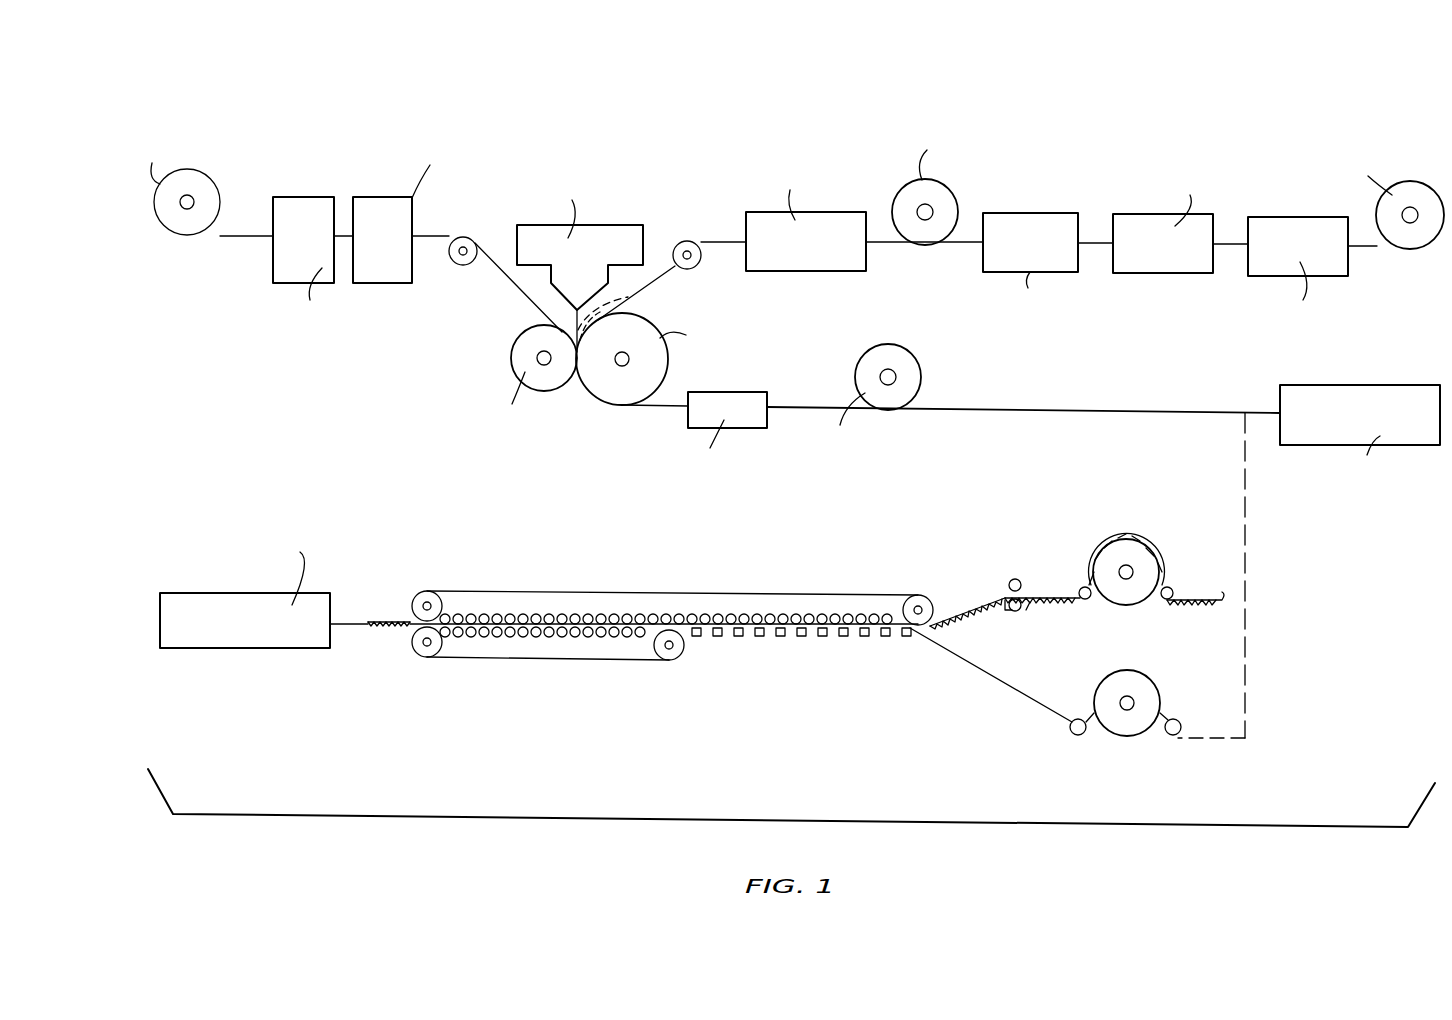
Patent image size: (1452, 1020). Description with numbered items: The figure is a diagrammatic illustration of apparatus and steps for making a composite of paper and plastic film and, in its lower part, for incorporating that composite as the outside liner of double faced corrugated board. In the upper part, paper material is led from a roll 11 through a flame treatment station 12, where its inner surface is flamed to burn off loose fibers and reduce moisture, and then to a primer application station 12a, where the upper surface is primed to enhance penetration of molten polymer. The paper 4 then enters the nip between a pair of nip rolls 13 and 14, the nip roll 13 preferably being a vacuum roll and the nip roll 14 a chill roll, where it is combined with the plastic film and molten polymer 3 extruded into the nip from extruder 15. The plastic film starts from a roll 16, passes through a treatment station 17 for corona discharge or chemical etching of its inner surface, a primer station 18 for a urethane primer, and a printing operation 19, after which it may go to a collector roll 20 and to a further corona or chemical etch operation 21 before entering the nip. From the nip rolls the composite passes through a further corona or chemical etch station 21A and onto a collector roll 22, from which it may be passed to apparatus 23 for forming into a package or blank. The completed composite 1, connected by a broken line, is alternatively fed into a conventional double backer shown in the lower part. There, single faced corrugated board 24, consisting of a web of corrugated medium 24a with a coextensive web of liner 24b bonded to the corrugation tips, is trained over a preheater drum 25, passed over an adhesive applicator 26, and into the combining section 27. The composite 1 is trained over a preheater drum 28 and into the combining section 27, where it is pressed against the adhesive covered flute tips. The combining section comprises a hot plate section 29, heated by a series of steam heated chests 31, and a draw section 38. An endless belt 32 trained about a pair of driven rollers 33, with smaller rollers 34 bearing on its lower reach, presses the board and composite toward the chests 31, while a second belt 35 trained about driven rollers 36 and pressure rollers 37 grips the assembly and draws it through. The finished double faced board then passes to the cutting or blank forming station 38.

The composite 1 is at (790, 405).
The molten polymer 3 is at (632, 298).
The paper 4 is at (250, 238).
The roll 11 is at (168, 238).
The flame treatment station 12 is at (293, 196).
The primer application station 12a is at (374, 196).
The nip roll 13 is at (518, 332).
The nip roll 14 is at (600, 396).
The extruder 15 is at (650, 232).
The roll of plastic film material 16 is at (1432, 245).
The treatment station 17 is at (1305, 216).
The primer station 18 is at (1160, 280).
The printing operation 19 is at (1038, 212).
The collector roll 20 is at (957, 200).
The corona discharge treatment or chemical etch operation 21 is at (822, 270).
The corona discharge treatment or chemical etch station 21A is at (688, 418).
The collector roll 22 is at (858, 348).
The apparatus 23 is at (1335, 392).
The single faced corrugated board 24 is at (1112, 545).
The web of corrugated medium 24a is at (1063, 604).
The web of liner 24b is at (1192, 598).
The preheater drum 25 is at (1130, 545).
The adhesive applicator 26 is at (1008, 612).
The combining section 27 is at (782, 582).
The preheater drum 28 is at (1152, 690).
The hot plate section 29 is at (852, 642).
The steam heated chests 31 is at (792, 638).
The endless belt 32 is at (628, 592).
The driven rollers 33 is at (416, 596).
The smaller rollers 34 is at (566, 612).
The second belt 35 is at (620, 662).
The driven rollers 36 is at (410, 658).
The pressure rollers 37 is at (566, 640).
The cutting or blank forming station 38 is at (265, 650).